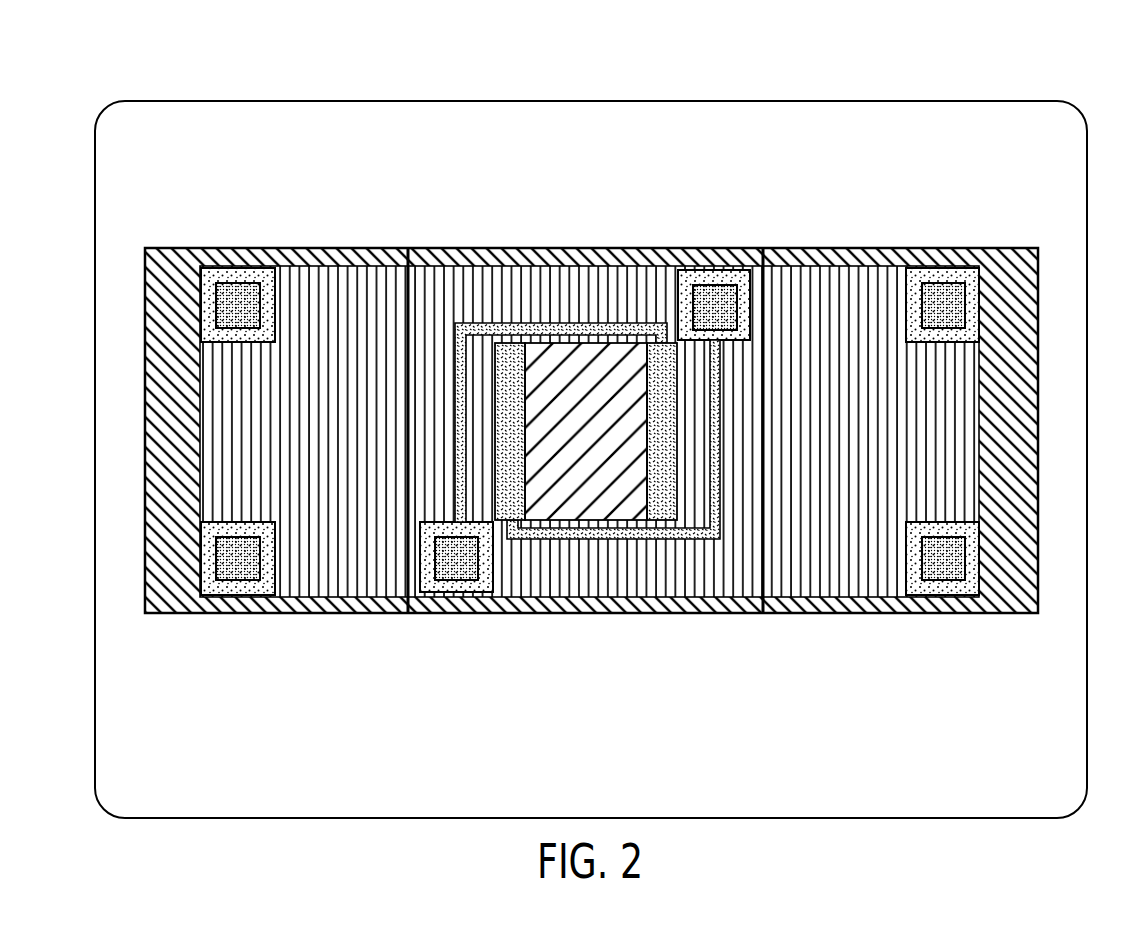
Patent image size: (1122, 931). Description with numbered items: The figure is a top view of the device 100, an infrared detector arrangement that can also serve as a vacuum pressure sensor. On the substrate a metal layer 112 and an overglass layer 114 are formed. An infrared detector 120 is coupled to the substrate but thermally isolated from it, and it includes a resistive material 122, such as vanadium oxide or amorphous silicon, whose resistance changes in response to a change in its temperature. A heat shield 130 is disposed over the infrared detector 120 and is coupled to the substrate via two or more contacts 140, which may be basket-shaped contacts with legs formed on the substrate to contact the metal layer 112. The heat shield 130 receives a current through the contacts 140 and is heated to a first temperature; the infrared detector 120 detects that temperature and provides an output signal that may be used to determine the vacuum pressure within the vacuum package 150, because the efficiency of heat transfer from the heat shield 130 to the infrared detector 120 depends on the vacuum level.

The device 100 is at (182, 97).
The metal layer 112 is at (208, 564).
The overglass layer 114 is at (173, 358).
The infrared detector 120 is at (597, 312).
The resistive material 122 is at (665, 362).
The heat shield 130 is at (378, 290).
The contacts 140 is at (200, 333).
The vacuum package 150 is at (750, 101).